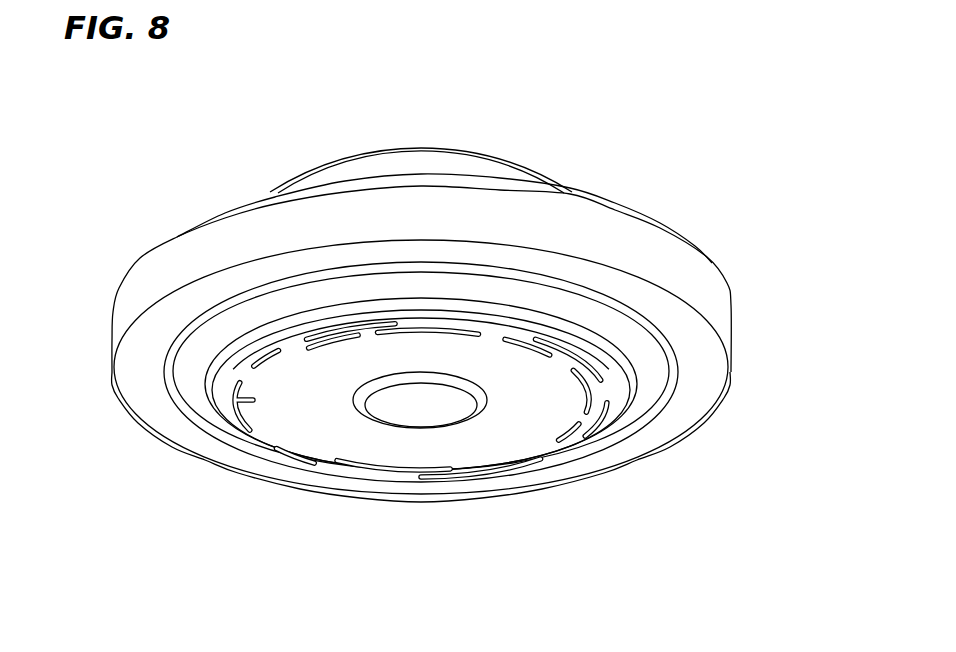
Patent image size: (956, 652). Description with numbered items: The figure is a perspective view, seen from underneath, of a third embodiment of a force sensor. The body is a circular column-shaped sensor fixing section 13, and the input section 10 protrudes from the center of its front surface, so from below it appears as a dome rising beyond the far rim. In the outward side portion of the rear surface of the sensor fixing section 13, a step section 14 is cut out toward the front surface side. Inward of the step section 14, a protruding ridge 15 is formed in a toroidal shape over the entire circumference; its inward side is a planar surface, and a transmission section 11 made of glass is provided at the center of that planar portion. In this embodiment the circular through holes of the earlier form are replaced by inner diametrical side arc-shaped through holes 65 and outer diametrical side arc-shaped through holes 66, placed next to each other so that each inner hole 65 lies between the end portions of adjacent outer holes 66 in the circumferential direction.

The input section 10 is at (357, 154).
The transmission section 11 is at (414, 420).
The sensor fixing section 13 is at (672, 180).
The step section 14 is at (696, 388).
The protruding ridge 15 is at (645, 438).
The inner diametrical side arc-shaped through holes 65 is at (543, 447).
The outer diametrical side arc-shaped through holes 66 is at (590, 440).